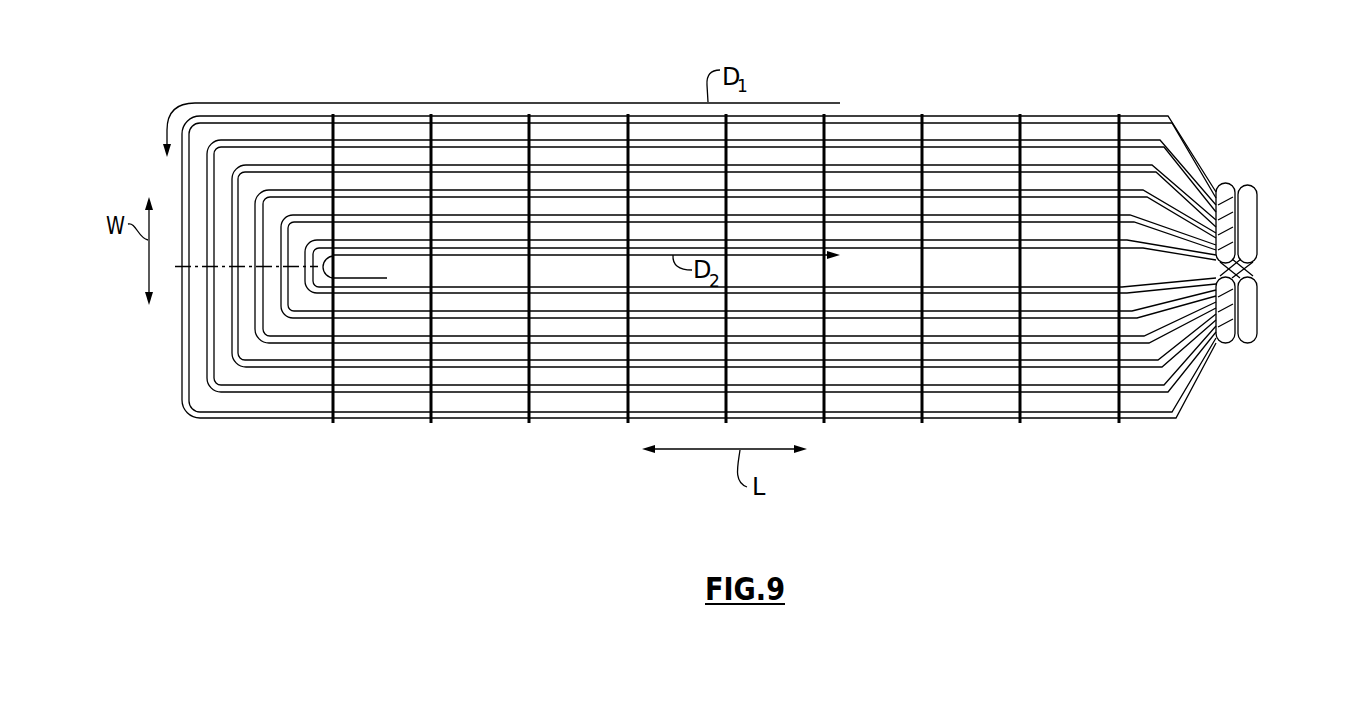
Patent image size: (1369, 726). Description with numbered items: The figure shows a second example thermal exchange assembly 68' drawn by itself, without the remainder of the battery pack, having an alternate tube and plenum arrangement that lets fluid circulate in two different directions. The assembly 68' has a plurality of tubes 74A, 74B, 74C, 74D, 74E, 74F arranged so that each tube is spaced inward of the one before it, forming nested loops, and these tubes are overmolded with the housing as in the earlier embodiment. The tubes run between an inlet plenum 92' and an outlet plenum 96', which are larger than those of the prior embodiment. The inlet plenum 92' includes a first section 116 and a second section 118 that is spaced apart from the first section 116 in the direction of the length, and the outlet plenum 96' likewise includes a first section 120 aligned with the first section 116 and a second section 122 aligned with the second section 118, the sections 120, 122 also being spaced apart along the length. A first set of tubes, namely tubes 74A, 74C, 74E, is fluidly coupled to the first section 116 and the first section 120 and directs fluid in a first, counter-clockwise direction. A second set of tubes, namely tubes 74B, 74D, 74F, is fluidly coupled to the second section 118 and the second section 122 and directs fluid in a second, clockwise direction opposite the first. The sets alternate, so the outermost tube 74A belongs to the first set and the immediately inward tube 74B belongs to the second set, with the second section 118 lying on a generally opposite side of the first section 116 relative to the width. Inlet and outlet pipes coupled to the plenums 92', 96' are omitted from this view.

The thermal exchange assembly 68' is at (721, 236).
The tube 74A is at (970, 115).
The tube 74B is at (893, 140).
The tube 74C is at (855, 165).
The tube 74D is at (1058, 190).
The tube 74E is at (1095, 218).
The tube 74F is at (1140, 240).
The inlet plenum 92' is at (1262, 204).
The outlet plenum 96' is at (1250, 365).
The first section 116 is at (1233, 189).
The second section 118 is at (1258, 310).
The first section 120 is at (1232, 355).
The second section 122 is at (1258, 215).